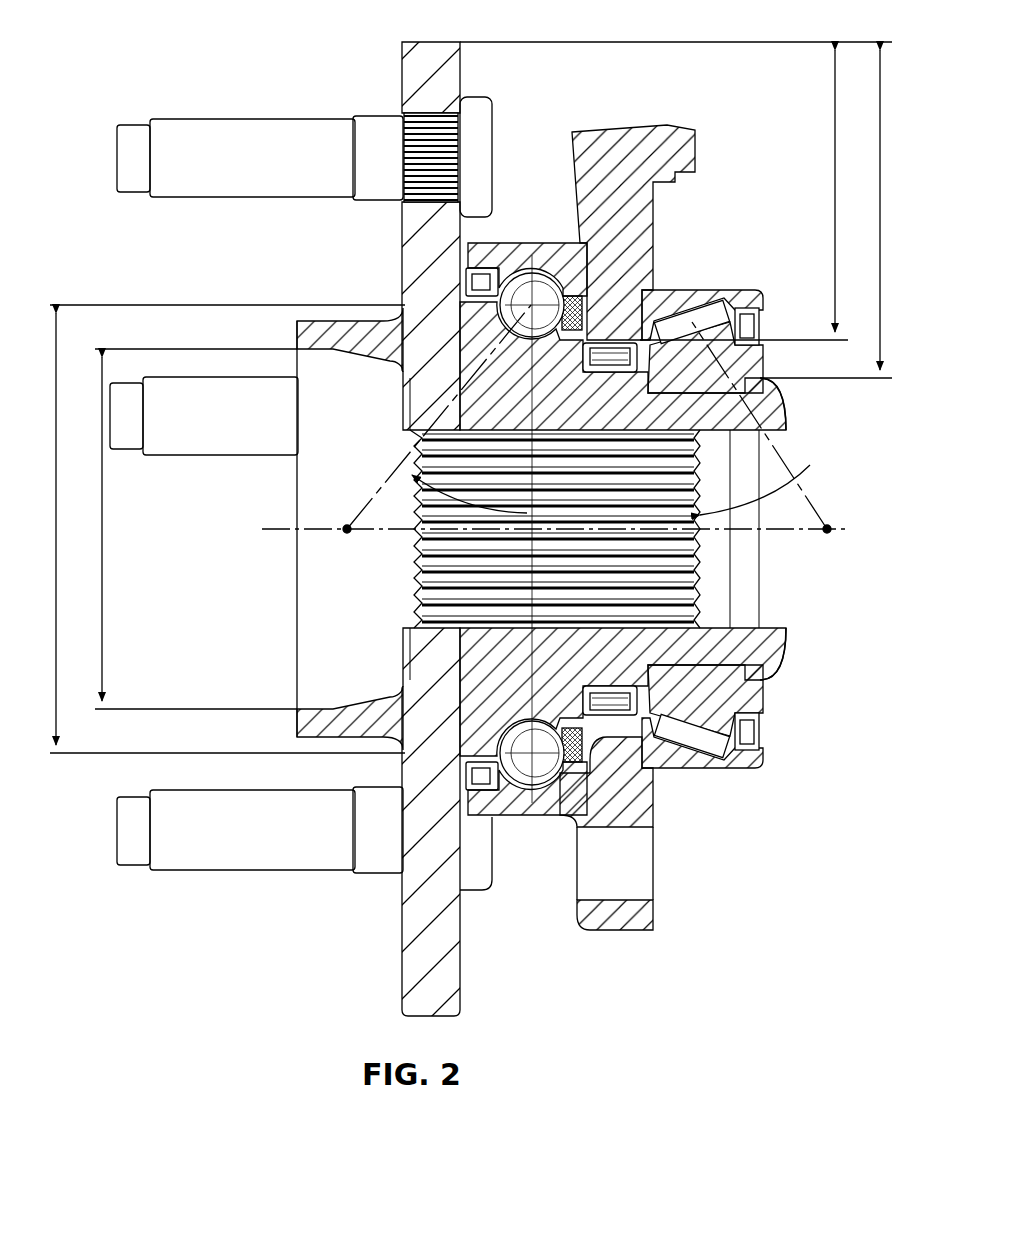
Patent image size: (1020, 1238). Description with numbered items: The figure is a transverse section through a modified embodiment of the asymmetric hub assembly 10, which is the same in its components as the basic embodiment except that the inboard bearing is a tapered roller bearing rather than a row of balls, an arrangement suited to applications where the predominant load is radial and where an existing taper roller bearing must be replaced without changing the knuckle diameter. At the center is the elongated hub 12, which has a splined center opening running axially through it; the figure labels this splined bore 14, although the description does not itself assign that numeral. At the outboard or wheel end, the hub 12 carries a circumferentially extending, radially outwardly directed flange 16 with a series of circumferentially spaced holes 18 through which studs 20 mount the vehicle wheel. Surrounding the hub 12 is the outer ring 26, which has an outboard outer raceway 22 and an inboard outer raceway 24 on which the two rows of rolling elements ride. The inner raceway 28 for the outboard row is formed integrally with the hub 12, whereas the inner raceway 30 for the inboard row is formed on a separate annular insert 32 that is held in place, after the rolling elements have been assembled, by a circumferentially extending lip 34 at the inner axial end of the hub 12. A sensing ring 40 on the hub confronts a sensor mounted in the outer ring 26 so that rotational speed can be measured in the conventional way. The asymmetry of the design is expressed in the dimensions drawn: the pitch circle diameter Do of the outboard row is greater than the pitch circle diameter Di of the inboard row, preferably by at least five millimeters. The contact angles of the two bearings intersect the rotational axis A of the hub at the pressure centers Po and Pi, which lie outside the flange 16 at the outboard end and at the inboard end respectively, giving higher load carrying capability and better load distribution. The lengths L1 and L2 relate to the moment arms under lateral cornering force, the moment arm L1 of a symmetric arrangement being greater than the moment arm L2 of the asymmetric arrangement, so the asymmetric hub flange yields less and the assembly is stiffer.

The asymmetric hub assembly 10 is at (124, 60).
The hub 12 is at (780, 650).
The splined bore 14 is at (475, 608).
The flange 16 is at (402, 980).
The holes 18 is at (430, 110).
The studs 20 is at (252, 118).
The outer raceway 22 is at (530, 280).
The outer raceway 24 is at (700, 312).
The outer ring 26 is at (748, 290).
The inner raceway 28 is at (402, 305).
The inner raceway 30 is at (755, 418).
The annular insert 32 is at (767, 353).
The lip 34 is at (787, 380).
The sensing ring 40 is at (620, 128).
The pressure center Po is at (347, 535).
The pressure center Pi is at (827, 535).
The pitch circle diameter of inboard row Di is at (102, 520).
The pitch circle diameter of outboard row Do is at (56, 566).
The moment arm L1 is at (880, 142).
The moment arm L2 is at (835, 196).
The rotational axis A is at (555, 530).